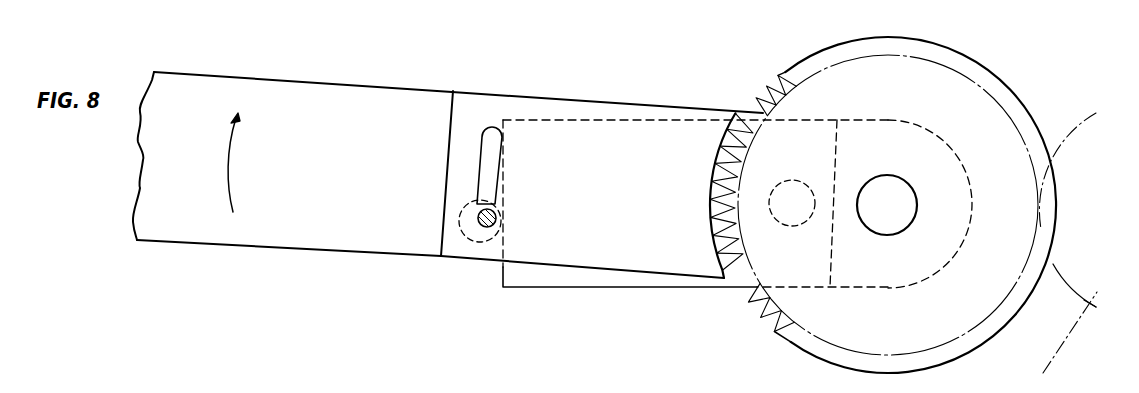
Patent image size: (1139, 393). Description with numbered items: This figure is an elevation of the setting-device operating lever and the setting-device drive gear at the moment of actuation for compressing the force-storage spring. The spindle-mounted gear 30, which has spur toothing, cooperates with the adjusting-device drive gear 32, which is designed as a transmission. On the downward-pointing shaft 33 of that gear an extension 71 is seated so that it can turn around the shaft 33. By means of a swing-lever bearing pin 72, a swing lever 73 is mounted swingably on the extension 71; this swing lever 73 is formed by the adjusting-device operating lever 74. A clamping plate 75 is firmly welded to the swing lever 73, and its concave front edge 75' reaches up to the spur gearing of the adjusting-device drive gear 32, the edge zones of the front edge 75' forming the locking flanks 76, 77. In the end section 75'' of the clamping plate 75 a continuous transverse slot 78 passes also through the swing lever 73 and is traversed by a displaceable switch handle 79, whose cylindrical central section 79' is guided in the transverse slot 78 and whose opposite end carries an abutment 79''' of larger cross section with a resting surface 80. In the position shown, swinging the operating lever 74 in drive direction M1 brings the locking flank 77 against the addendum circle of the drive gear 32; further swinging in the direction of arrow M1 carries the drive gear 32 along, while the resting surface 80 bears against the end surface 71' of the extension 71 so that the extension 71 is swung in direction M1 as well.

The gear 30 is at (1063, 253).
The adjusting-device drive gear 32 is at (805, 318).
The shaft 33 is at (898, 207).
The extension 71 is at (737, 231).
The end surface 71' is at (485, 309).
The swing-lever bearing pin 72 is at (782, 212).
The swing lever 73 is at (360, 228).
The adjusting-device operating lever 74 is at (245, 247).
The clamping plate 75 is at (602, 217).
The front edge 75' is at (775, 183).
The end section 75'' is at (482, 82).
The locking flank 76 is at (713, 275).
The locking flank 77 is at (732, 112).
The transverse slot 78 is at (490, 177).
The switch handle 79 is at (457, 293).
The cylindrical central section 79' is at (444, 276).
The abutment 79''' is at (520, 128).
The resting surface 80 is at (498, 232).
The drive direction M1 is at (250, 162).